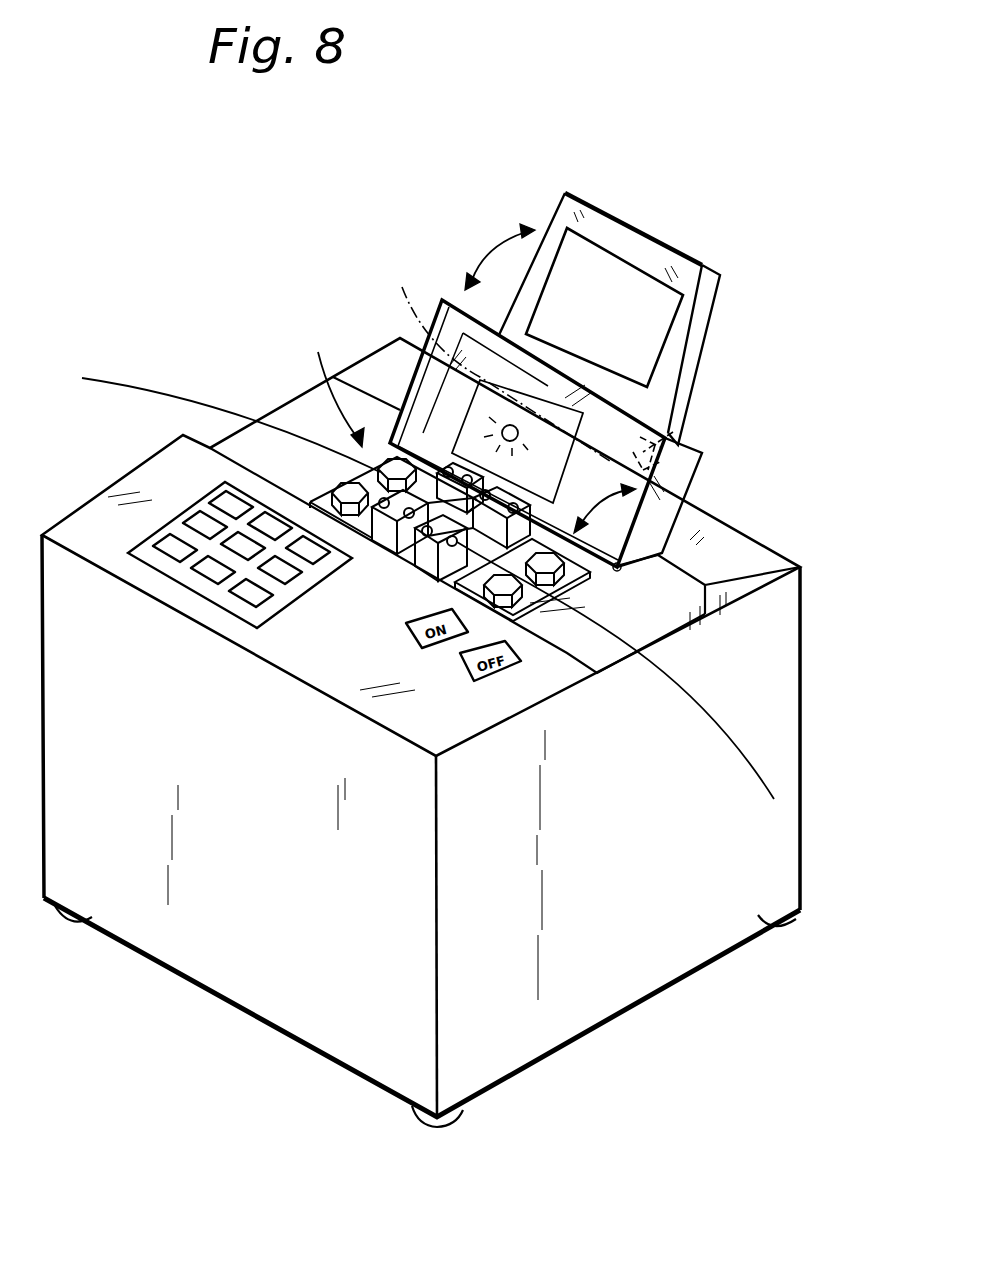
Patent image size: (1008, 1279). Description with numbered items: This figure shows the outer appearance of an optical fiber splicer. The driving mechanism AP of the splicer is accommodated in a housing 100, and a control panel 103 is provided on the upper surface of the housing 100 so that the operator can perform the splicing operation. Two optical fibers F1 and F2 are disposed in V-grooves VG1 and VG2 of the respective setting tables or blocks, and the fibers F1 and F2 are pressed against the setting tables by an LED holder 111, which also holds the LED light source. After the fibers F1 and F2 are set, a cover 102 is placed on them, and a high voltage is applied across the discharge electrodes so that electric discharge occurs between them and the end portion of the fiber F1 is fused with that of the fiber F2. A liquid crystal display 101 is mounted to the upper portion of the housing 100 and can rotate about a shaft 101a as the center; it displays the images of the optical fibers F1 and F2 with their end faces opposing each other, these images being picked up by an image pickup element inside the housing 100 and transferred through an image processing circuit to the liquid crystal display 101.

The housing 100 is at (779, 649).
The liquid crystal display 101 is at (705, 313).
The shaft 101a is at (673, 432).
The cover 102 is at (675, 482).
The control panel 103 is at (180, 523).
The LED holder 111 is at (496, 361).
The driving mechanism AP is at (332, 385).
The fiber F1 is at (681, 691).
The fiber F2 is at (177, 391).
The V-groove VG1 is at (437, 565).
The V-groove VG2 is at (400, 537).